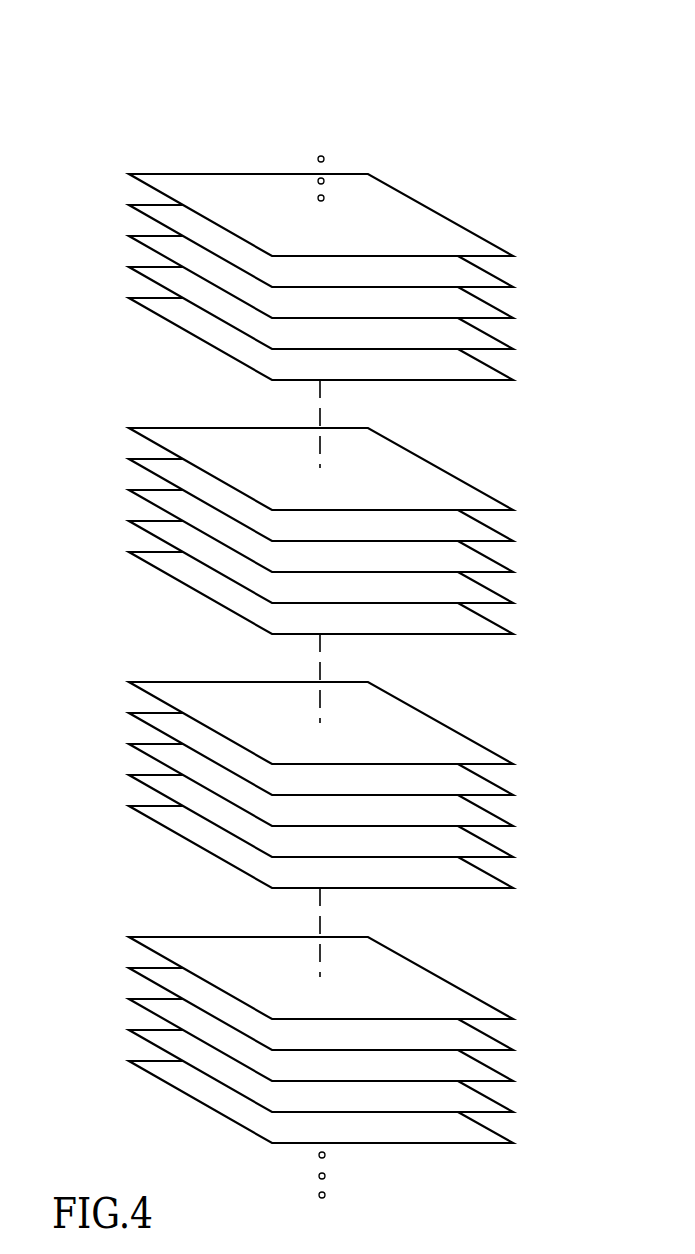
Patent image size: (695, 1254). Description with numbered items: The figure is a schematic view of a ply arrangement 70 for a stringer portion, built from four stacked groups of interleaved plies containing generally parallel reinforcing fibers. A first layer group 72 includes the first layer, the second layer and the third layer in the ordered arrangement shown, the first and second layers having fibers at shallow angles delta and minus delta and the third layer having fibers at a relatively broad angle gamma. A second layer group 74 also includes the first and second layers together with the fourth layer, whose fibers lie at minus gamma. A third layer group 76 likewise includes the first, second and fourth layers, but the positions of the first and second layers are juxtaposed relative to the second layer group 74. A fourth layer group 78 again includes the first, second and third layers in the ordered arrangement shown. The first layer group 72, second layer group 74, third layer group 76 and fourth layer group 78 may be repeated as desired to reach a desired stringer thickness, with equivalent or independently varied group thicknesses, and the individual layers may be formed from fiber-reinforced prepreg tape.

The ply arrangement 70 is at (490, 93).
The first layer group 72 is at (552, 310).
The second layer group 74 is at (552, 564).
The third layer group 76 is at (552, 818).
The fourth layer group 78 is at (552, 1073).